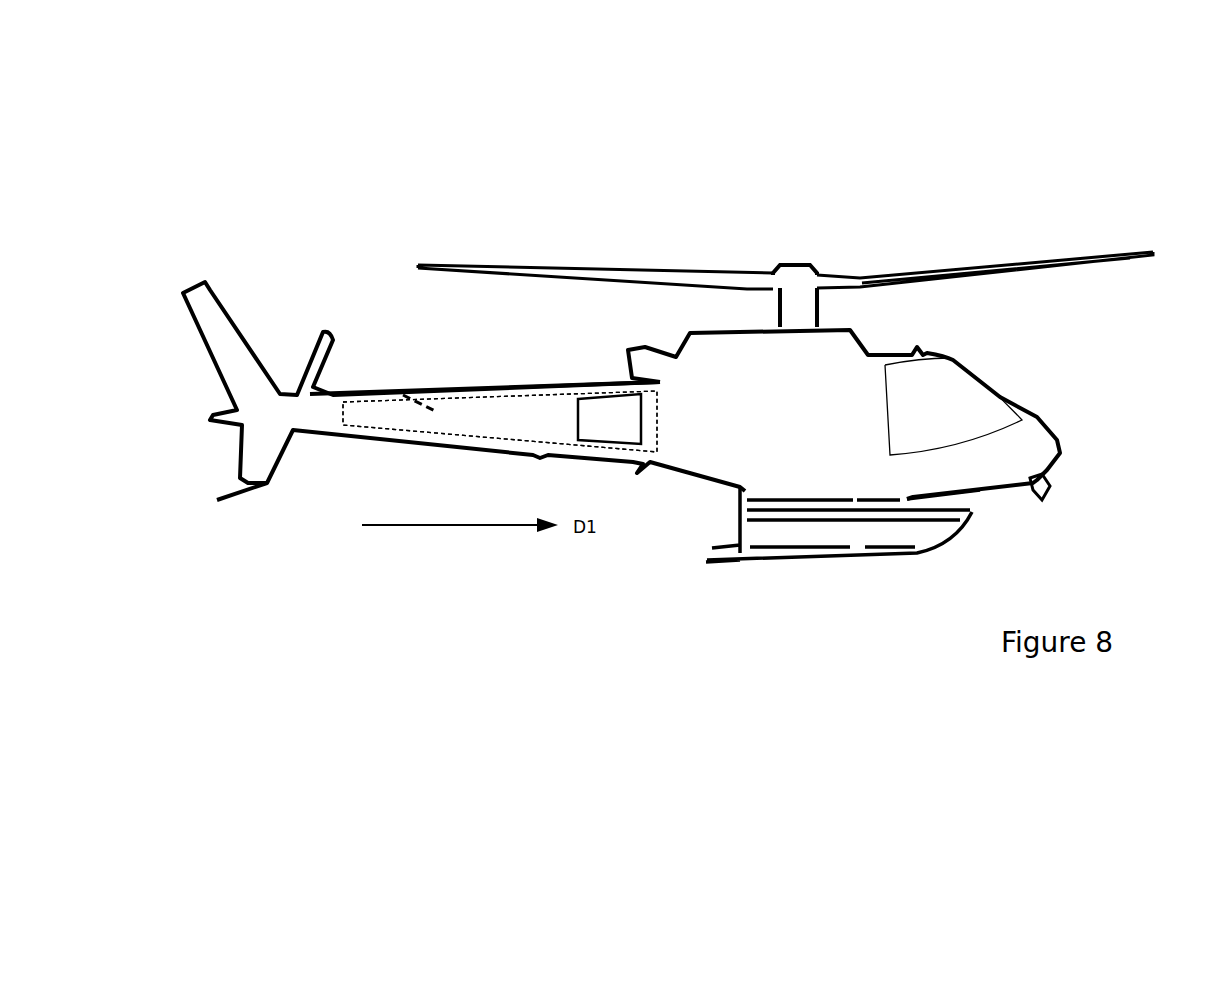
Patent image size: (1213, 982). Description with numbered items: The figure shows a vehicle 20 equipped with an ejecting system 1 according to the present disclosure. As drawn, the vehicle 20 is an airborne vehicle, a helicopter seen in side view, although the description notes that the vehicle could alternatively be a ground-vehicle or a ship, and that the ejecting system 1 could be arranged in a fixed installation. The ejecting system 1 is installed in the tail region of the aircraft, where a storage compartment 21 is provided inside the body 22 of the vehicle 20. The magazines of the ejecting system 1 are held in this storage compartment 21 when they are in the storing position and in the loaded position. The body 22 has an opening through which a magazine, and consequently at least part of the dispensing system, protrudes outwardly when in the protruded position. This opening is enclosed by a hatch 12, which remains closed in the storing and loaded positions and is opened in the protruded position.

The vehicle 20 is at (378, 153).
The storage compartment 21 is at (397, 395).
The body 22 is at (560, 387).
The hatch 12 is at (618, 418).
The ejecting system 1 is at (670, 452).